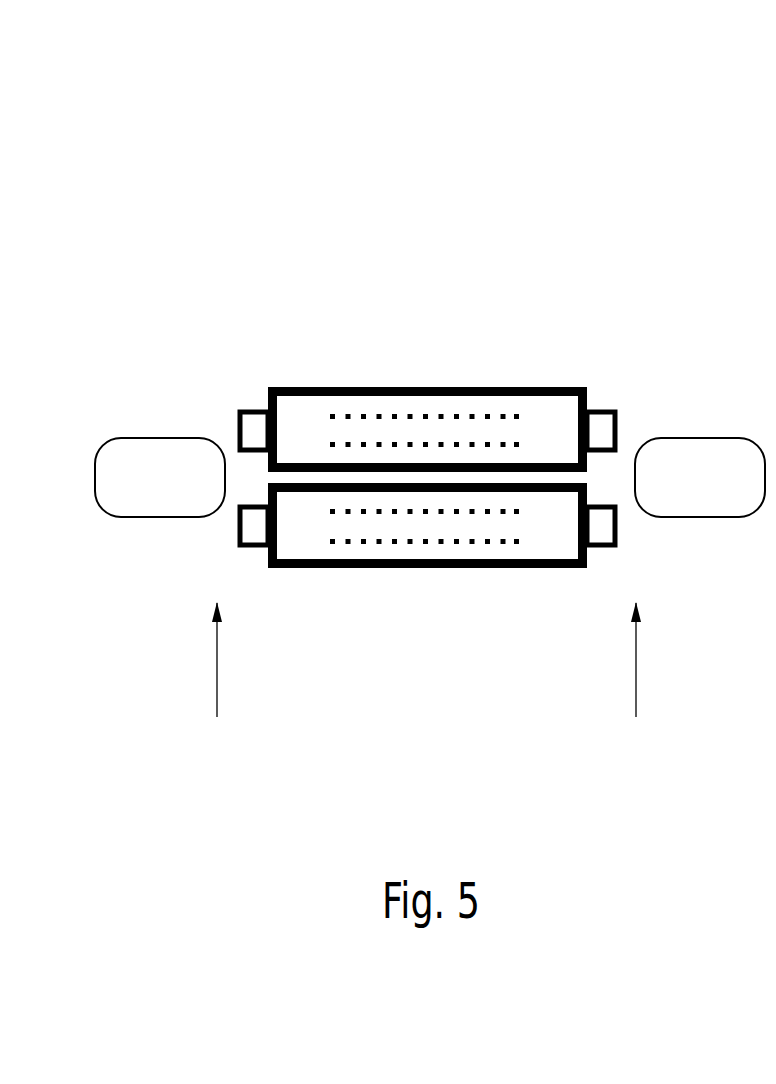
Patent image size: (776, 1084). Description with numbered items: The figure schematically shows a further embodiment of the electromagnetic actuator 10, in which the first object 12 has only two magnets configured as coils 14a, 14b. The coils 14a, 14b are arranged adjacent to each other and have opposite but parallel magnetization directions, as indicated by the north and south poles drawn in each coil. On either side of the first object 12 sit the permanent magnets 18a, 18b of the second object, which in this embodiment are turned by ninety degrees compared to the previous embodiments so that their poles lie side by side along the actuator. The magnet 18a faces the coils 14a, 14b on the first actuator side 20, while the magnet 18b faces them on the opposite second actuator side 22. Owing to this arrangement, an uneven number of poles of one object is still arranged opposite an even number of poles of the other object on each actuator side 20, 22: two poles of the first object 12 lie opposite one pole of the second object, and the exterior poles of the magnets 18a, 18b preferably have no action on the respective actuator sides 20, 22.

The electromagnetic actuator 10 is at (300, 180).
The first object 12 is at (473, 323).
The coil 14a is at (426, 407).
The coil 14b is at (426, 550).
The magnet 18a is at (168, 507).
The magnet 18b is at (690, 453).
The first actuator side 20 is at (212, 680).
The second actuator side 22 is at (637, 680).